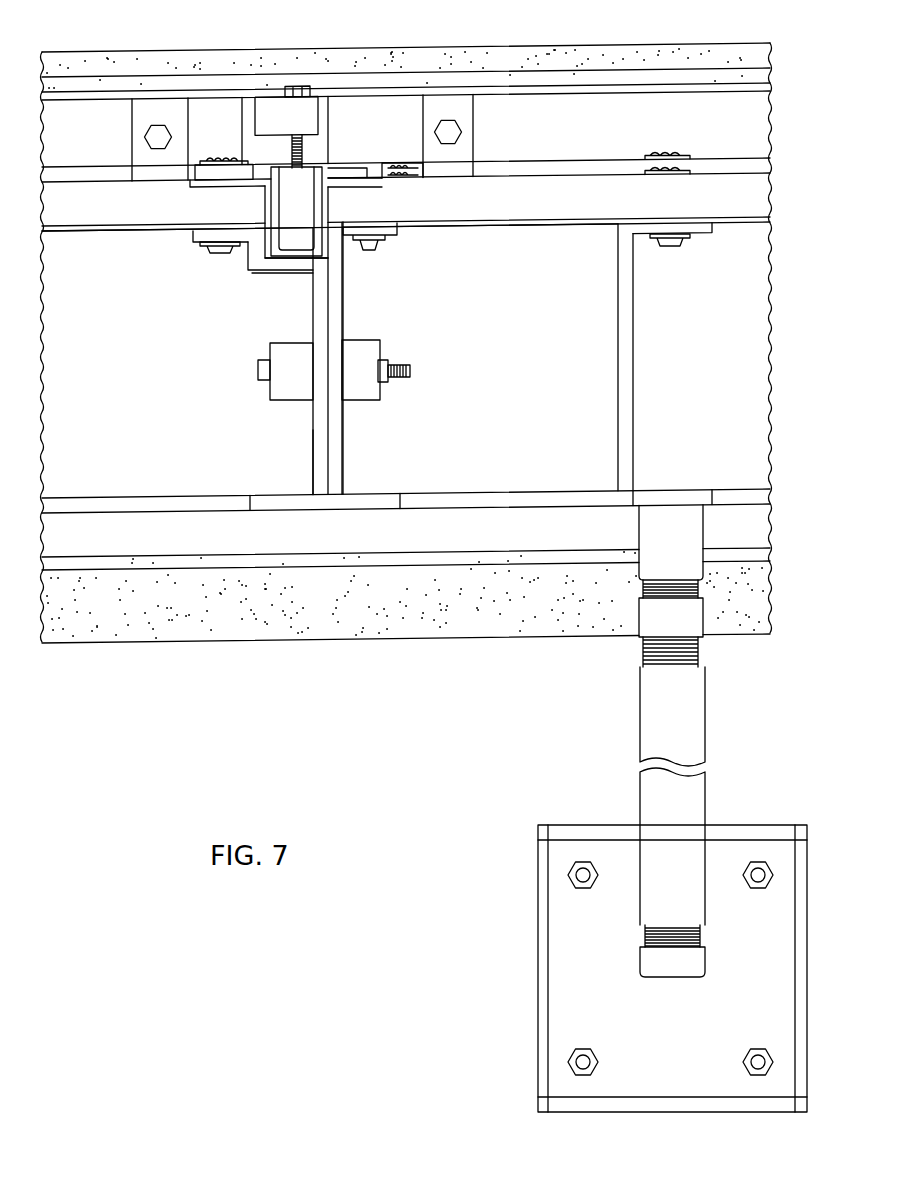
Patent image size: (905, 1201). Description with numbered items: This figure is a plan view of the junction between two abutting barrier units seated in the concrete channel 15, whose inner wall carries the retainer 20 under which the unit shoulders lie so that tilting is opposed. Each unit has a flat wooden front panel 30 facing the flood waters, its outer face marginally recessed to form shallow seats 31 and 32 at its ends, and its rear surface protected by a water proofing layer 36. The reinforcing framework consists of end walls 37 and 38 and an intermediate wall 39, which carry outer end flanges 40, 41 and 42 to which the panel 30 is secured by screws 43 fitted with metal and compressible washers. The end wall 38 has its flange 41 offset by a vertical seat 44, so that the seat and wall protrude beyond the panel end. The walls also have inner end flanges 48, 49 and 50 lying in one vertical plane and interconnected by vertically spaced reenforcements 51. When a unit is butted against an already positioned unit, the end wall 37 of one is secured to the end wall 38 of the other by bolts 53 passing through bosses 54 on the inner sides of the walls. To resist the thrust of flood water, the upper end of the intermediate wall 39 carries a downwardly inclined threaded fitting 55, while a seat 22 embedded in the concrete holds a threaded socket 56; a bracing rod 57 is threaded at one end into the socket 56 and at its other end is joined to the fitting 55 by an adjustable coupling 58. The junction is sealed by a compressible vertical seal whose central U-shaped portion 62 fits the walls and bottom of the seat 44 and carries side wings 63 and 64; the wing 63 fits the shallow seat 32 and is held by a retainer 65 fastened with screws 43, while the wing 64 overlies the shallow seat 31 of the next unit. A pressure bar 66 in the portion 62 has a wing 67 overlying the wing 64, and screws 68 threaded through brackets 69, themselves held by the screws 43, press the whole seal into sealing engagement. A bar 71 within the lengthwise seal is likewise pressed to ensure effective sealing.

The concrete channel 15 is at (338, 648).
The retainer 20 is at (147, 550).
The seat 22 is at (582, 1015).
The front panel 30 is at (100, 232).
The shallow seat 31 is at (382, 187).
The shallow seat 32 is at (190, 186).
The water proofing layer 36 is at (76, 232).
The end wall 37 is at (342, 432).
The end wall 38 is at (313, 462).
The intermediate wall 39 is at (628, 370).
The outer end flange 40 is at (347, 238).
The outer end flange 41 is at (197, 242).
The outer end flange 42 is at (700, 235).
The screws 43 is at (668, 247).
The vertical seat 44 is at (273, 267).
The inner end flange 48 is at (380, 502).
The inner end flange 49 is at (283, 508).
The inner end flange 50 is at (668, 500).
The reenforcements 51 is at (95, 500).
The bolts 53 is at (393, 358).
The bosses 54 is at (270, 360).
The threaded fitting 55 is at (690, 537).
The threaded socket 56 is at (678, 967).
The bracing rod 57 is at (693, 795).
The adjustable coupling 58 is at (652, 628).
The U-shaped portion 62 is at (293, 258).
The wing 63 is at (236, 190).
The wing 64 is at (372, 187).
The retainer 65 is at (222, 170).
The pressure bar 66 is at (316, 224).
The wing 67 is at (343, 170).
The screws 68 is at (299, 92).
The brackets 69 is at (268, 97).
The bar 71 is at (64, 140).